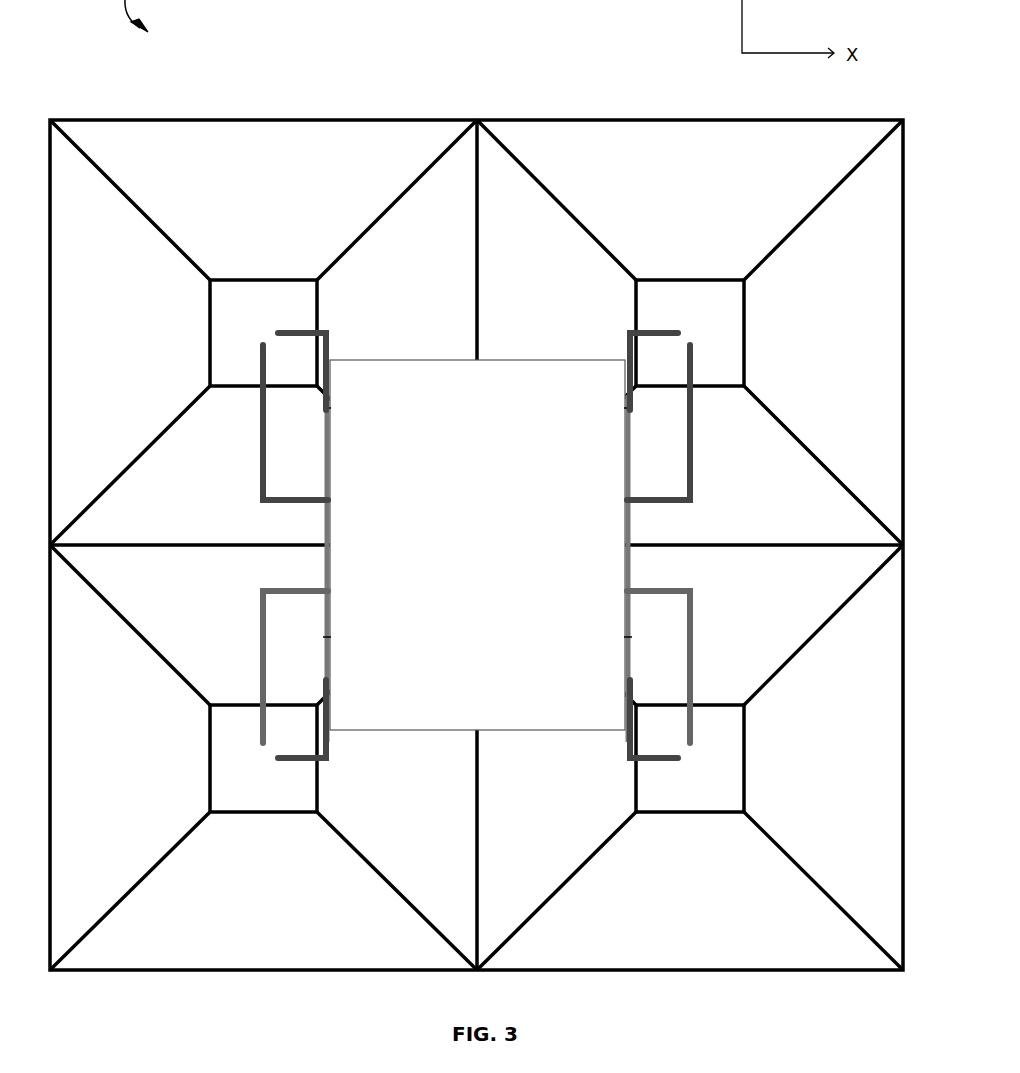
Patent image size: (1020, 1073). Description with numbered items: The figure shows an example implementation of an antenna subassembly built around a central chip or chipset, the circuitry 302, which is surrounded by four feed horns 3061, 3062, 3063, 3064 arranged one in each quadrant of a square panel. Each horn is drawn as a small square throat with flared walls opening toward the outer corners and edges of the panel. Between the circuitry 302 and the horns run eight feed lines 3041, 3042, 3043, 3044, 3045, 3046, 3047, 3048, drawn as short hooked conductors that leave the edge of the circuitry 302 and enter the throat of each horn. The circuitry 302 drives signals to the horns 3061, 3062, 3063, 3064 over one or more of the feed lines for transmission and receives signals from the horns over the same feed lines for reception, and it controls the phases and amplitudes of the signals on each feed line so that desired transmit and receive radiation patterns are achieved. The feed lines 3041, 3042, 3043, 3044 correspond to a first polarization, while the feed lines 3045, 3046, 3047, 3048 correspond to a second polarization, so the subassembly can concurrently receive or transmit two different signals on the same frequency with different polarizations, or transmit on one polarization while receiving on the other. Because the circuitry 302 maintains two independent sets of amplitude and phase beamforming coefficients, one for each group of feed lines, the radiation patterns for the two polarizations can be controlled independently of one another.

The circuitry 302 is at (477, 545).
The feed line 3041 is at (331, 352).
The feed line 3042 is at (625, 352).
The feed line 3043 is at (331, 761).
The feed line 3044 is at (625, 759).
The feed line 3045 is at (259, 452).
The feed line 3046 is at (695, 452).
The feed line 3047 is at (259, 672).
The feed line 3048 is at (697, 649).
The feed horn 3061 is at (283, 120).
The feed horn 3062 is at (575, 120).
The feed horn 3063 is at (283, 970).
The feed horn 3064 is at (693, 970).